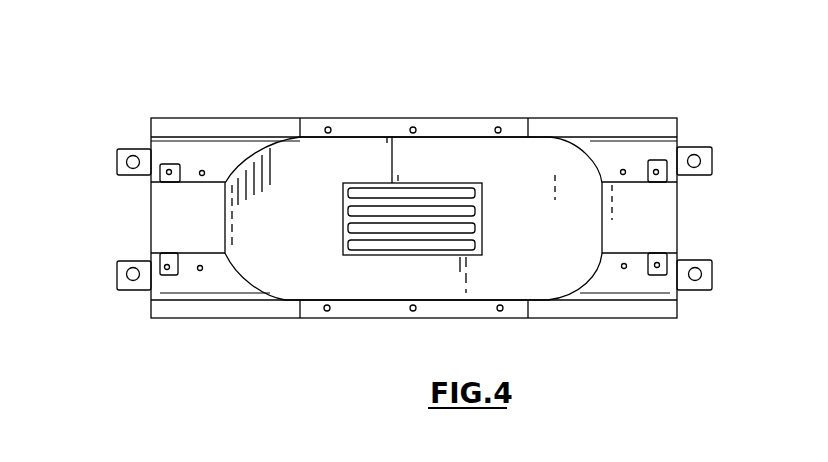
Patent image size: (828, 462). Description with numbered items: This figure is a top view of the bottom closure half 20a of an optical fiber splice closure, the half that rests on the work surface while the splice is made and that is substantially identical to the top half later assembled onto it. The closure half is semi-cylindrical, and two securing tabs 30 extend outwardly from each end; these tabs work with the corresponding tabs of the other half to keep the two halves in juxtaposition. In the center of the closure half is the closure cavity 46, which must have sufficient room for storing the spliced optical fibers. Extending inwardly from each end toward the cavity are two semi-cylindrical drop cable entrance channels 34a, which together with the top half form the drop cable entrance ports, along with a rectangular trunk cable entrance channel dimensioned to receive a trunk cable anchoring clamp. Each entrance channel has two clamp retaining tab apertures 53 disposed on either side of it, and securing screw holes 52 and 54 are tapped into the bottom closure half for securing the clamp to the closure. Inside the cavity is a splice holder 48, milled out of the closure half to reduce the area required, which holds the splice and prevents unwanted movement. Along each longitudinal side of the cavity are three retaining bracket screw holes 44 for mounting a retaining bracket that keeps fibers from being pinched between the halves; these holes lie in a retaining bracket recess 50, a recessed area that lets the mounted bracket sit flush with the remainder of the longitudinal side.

The bottom closure half 20a is at (613, 110).
The securing tabs 30 is at (133, 149).
The drop cable entrance channels 34a is at (193, 143).
The retaining bracket screw holes 44 is at (330, 310).
The closure cavity 46 is at (287, 276).
The splice holder 48 is at (442, 233).
The retaining bracket recess 50 is at (453, 123).
The securing screw holes 52 is at (169, 175).
The clamp retaining tab apertures 53 is at (160, 183).
The securing screw holes 54 is at (202, 176).